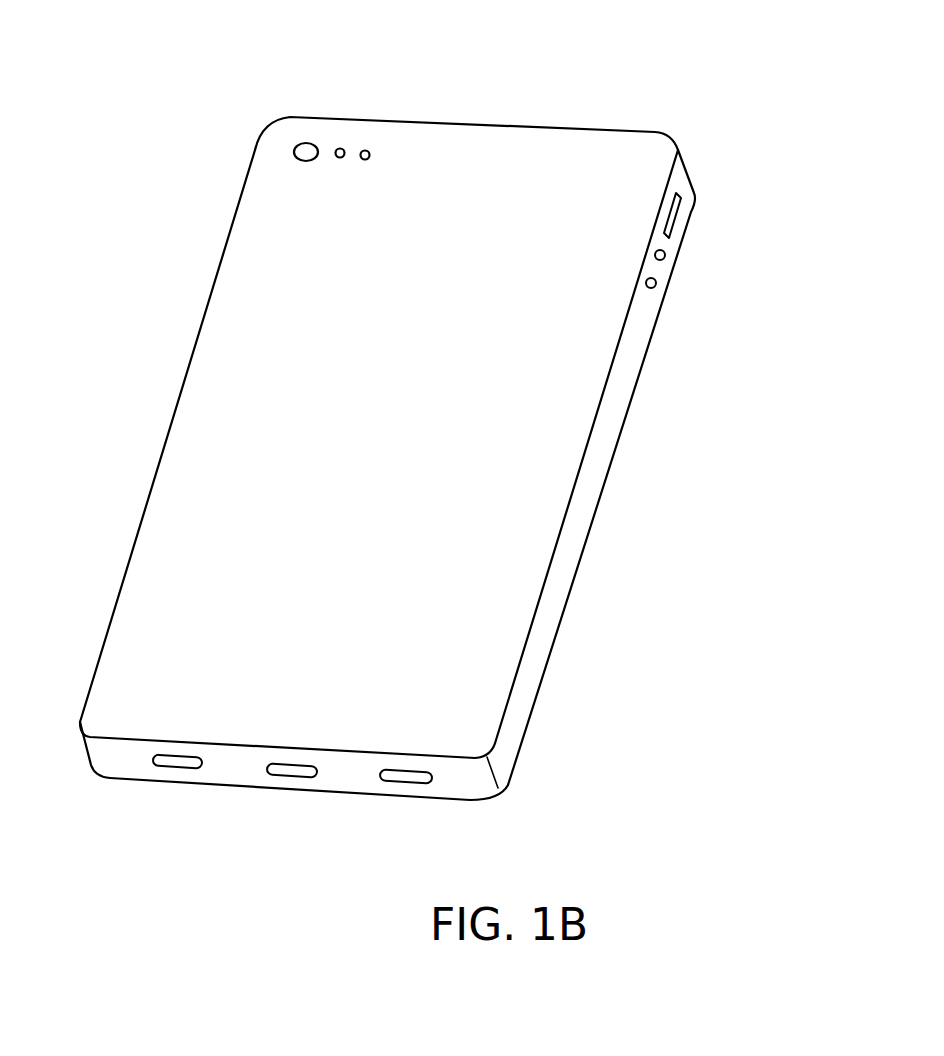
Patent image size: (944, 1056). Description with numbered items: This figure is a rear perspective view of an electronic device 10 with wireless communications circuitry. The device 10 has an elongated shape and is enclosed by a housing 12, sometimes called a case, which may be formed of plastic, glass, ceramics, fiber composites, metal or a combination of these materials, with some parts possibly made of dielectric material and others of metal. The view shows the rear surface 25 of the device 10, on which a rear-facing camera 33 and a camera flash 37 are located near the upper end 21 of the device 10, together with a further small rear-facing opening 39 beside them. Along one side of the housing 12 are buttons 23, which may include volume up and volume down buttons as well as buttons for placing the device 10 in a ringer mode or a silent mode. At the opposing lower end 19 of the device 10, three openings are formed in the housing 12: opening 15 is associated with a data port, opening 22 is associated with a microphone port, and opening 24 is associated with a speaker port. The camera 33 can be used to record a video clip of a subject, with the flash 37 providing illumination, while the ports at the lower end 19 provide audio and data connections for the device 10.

The electronic device 10 is at (697, 79).
The housing 12 is at (690, 176).
The opening 15 is at (295, 778).
The lower end 19 is at (540, 748).
The upper end 21 is at (241, 143).
The opening 22 is at (410, 784).
The buttons 23 is at (711, 196).
The opening 24 is at (175, 768).
The surface 25 is at (233, 363).
The camera 33 is at (306, 141).
The flash 37 is at (368, 150).
The flash 39 is at (342, 148).